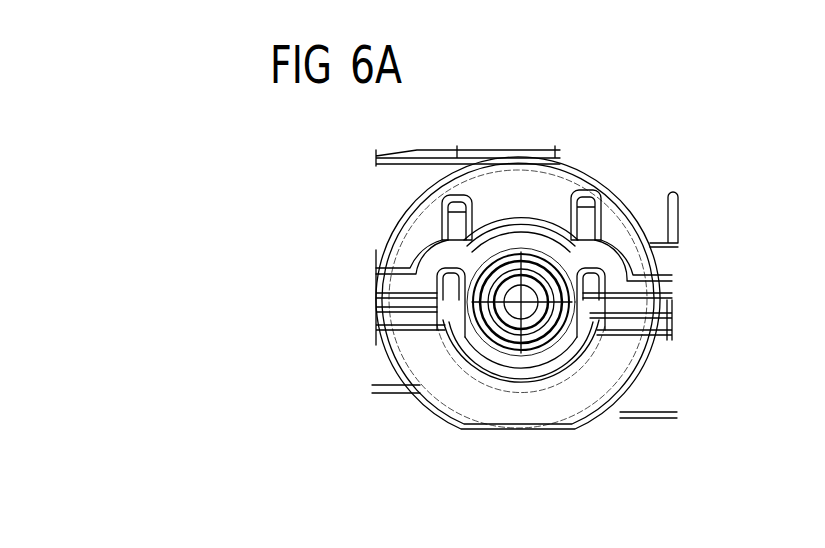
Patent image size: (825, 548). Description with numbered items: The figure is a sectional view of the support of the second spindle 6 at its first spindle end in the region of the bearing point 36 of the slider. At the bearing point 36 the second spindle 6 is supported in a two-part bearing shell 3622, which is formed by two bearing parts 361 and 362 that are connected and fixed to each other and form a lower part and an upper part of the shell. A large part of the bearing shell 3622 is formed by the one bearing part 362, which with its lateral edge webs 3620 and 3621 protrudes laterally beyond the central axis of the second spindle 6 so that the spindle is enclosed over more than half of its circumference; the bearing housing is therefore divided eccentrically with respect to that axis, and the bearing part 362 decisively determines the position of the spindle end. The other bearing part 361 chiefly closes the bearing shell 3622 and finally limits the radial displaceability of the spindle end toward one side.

The bearing point 36 is at (350, 287).
The bearing part 361 is at (545, 230).
The second spindle 6 is at (552, 292).
The lateral edge web 3620 is at (457, 297).
The lateral edge web 3621 is at (586, 295).
The bearing part 362 is at (550, 370).
The bearing shell 3622 is at (507, 350).